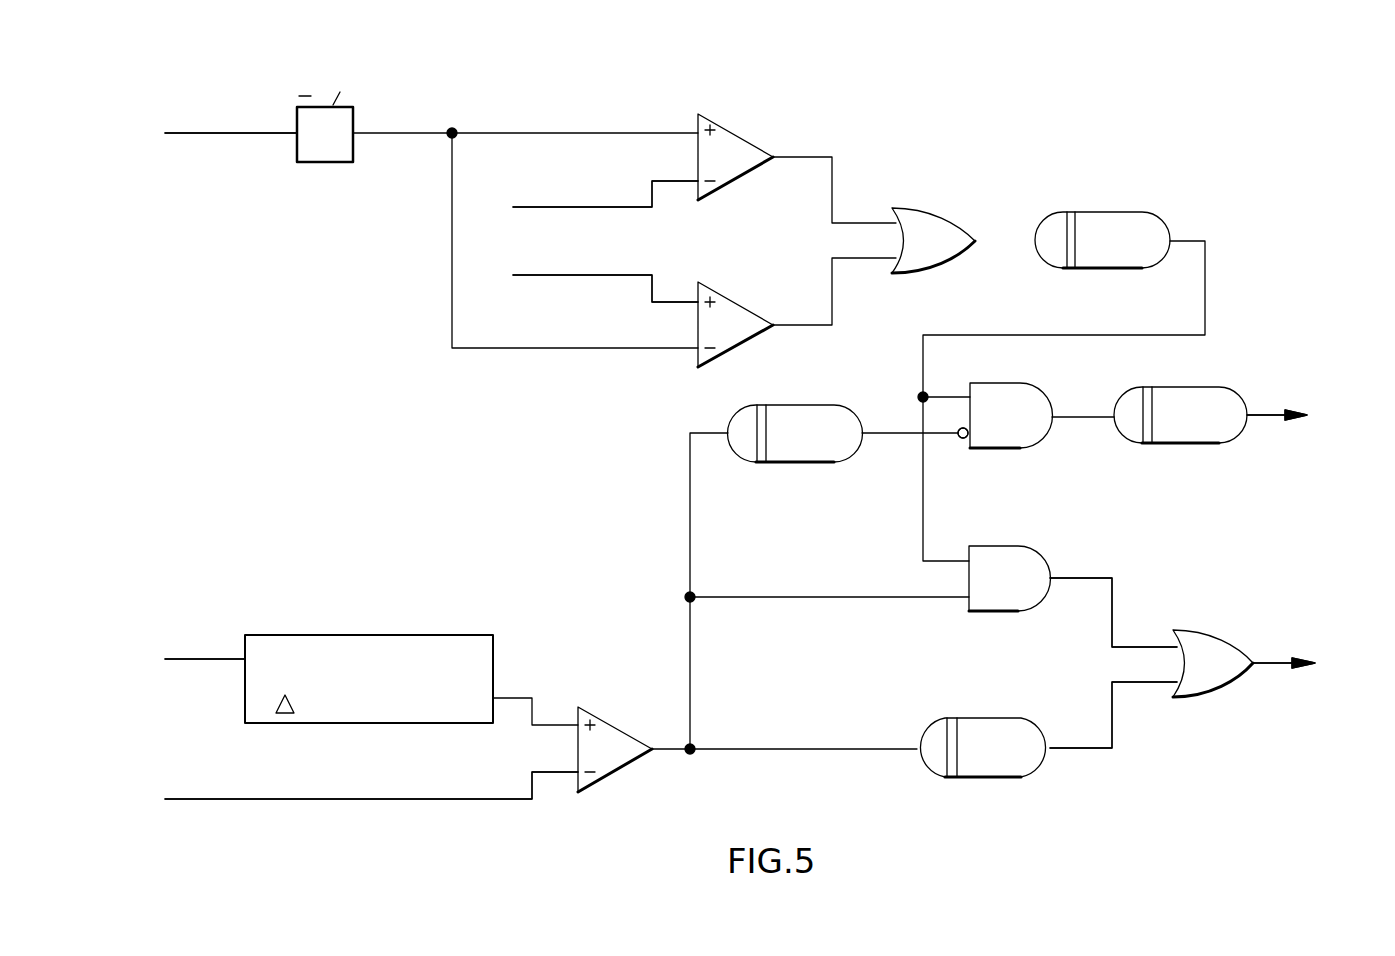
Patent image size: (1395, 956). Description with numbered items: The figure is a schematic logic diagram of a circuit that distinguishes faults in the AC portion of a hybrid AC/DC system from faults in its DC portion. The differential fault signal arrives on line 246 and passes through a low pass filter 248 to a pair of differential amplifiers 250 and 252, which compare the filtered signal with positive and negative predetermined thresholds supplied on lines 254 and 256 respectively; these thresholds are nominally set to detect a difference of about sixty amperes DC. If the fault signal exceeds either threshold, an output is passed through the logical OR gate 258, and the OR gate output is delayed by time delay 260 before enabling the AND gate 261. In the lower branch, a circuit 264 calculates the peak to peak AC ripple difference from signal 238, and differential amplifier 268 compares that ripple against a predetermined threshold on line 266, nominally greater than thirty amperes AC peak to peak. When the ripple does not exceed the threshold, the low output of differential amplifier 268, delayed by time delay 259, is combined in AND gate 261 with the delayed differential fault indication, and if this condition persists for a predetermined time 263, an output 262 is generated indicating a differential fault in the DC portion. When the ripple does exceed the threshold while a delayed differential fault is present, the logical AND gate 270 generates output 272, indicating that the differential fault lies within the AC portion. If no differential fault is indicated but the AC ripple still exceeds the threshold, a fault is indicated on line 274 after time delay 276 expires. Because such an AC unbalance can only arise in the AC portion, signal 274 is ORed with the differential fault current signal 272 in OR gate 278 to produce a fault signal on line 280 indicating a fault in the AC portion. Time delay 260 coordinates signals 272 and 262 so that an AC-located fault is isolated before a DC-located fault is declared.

The signal 238 is at (192, 659).
The line 246 is at (183, 133).
The low pass filter 248 is at (347, 107).
The differential amplifier 250 is at (730, 127).
The differential amplifier 252 is at (720, 295).
The line 254 is at (540, 207).
The line 256 is at (545, 275).
The logical OR gate 258 is at (920, 207).
The time delay 259 is at (787, 463).
The time delay 260 is at (1103, 212).
The AND gate 261 is at (993, 449).
The output 262 is at (1258, 412).
The predetermined time 263 is at (1180, 447).
The circuit 264 is at (378, 635).
The line 266 is at (298, 799).
The differential amplifier 268 is at (622, 725).
The logical AND gate 270 is at (997, 613).
The output 272 is at (1115, 607).
The line 274 is at (1115, 727).
The time delay 276 is at (993, 778).
The OR gate 278 is at (1213, 632).
The line 280 is at (1265, 667).